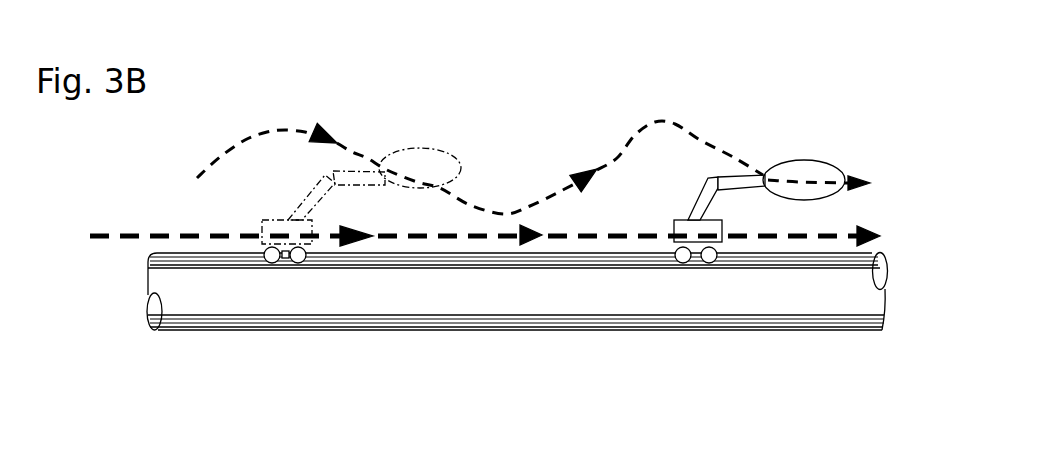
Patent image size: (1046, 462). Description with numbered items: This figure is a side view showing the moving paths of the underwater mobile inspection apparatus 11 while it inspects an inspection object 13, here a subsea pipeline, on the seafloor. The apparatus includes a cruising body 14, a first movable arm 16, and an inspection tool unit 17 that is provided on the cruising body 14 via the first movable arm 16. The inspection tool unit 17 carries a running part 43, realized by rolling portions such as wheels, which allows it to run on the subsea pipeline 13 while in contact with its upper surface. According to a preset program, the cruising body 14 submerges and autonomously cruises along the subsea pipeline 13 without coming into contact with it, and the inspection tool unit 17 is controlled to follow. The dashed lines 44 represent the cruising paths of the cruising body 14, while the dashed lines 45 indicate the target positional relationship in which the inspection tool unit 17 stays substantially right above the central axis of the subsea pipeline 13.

The underwater mobile inspection apparatus 11 is at (709, 177).
The inspection object 13 is at (735, 328).
The cruising body 14 is at (806, 160).
The first movable arm 16 is at (700, 193).
The inspection tool unit 17 is at (678, 220).
The running part 43 is at (707, 262).
The dashed lines 44 is at (468, 203).
The dashed lines 45 is at (503, 233).